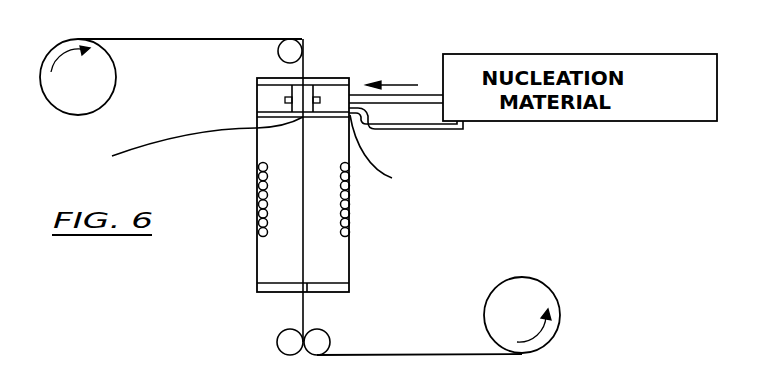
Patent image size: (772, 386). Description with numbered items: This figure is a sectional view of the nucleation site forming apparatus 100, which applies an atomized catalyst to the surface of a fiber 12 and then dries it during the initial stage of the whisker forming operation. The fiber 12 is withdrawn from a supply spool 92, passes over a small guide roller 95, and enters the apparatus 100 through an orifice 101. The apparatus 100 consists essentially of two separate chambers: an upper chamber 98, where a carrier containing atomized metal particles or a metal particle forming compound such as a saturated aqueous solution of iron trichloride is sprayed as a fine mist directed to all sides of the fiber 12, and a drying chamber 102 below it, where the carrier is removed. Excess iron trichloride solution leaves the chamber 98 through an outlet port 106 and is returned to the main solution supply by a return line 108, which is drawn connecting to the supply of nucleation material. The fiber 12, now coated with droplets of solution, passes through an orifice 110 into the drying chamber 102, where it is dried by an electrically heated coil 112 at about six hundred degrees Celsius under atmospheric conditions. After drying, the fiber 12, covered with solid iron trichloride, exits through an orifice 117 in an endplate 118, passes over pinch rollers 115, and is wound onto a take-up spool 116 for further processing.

The fiber 12 is at (212, 36).
The spool 92 is at (56, 87).
The guide roller 95 is at (278, 53).
The chamber 98 is at (257, 100).
The nucleation site forming apparatus 100 is at (466, 219).
The orifice 101 is at (306, 78).
The drying chamber 102 is at (257, 143).
The outlet port 106 is at (391, 153).
The return line 108 is at (456, 131).
The orifice 110 is at (187, 143).
The electrically heated coil 112 is at (350, 225).
The pinch rollers 115 is at (280, 340).
The spool 116 is at (533, 292).
The orifice 117 is at (310, 293).
The endplate 118 is at (276, 291).